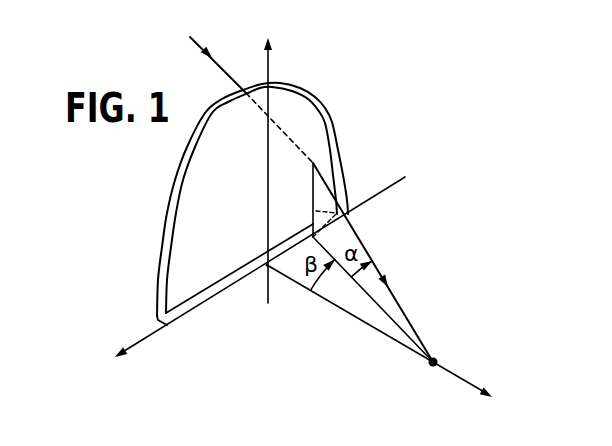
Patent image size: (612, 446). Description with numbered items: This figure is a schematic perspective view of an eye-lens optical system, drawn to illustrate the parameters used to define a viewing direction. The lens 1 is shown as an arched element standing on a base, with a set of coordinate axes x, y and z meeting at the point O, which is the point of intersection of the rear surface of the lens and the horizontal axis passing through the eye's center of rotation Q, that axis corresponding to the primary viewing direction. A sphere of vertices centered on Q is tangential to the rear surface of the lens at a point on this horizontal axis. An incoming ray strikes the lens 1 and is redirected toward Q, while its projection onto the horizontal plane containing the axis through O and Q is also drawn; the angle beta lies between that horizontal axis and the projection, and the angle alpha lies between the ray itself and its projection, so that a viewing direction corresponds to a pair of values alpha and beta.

The cylindrical reflecting mirror (trough reflector) 1 is at (173, 203).
The x axis x is at (385, 331).
The y axis y is at (277, 163).
The z axis z is at (260, 279).
The point O is at (258, 282).
The center of rotation of the eye Q is at (446, 354).